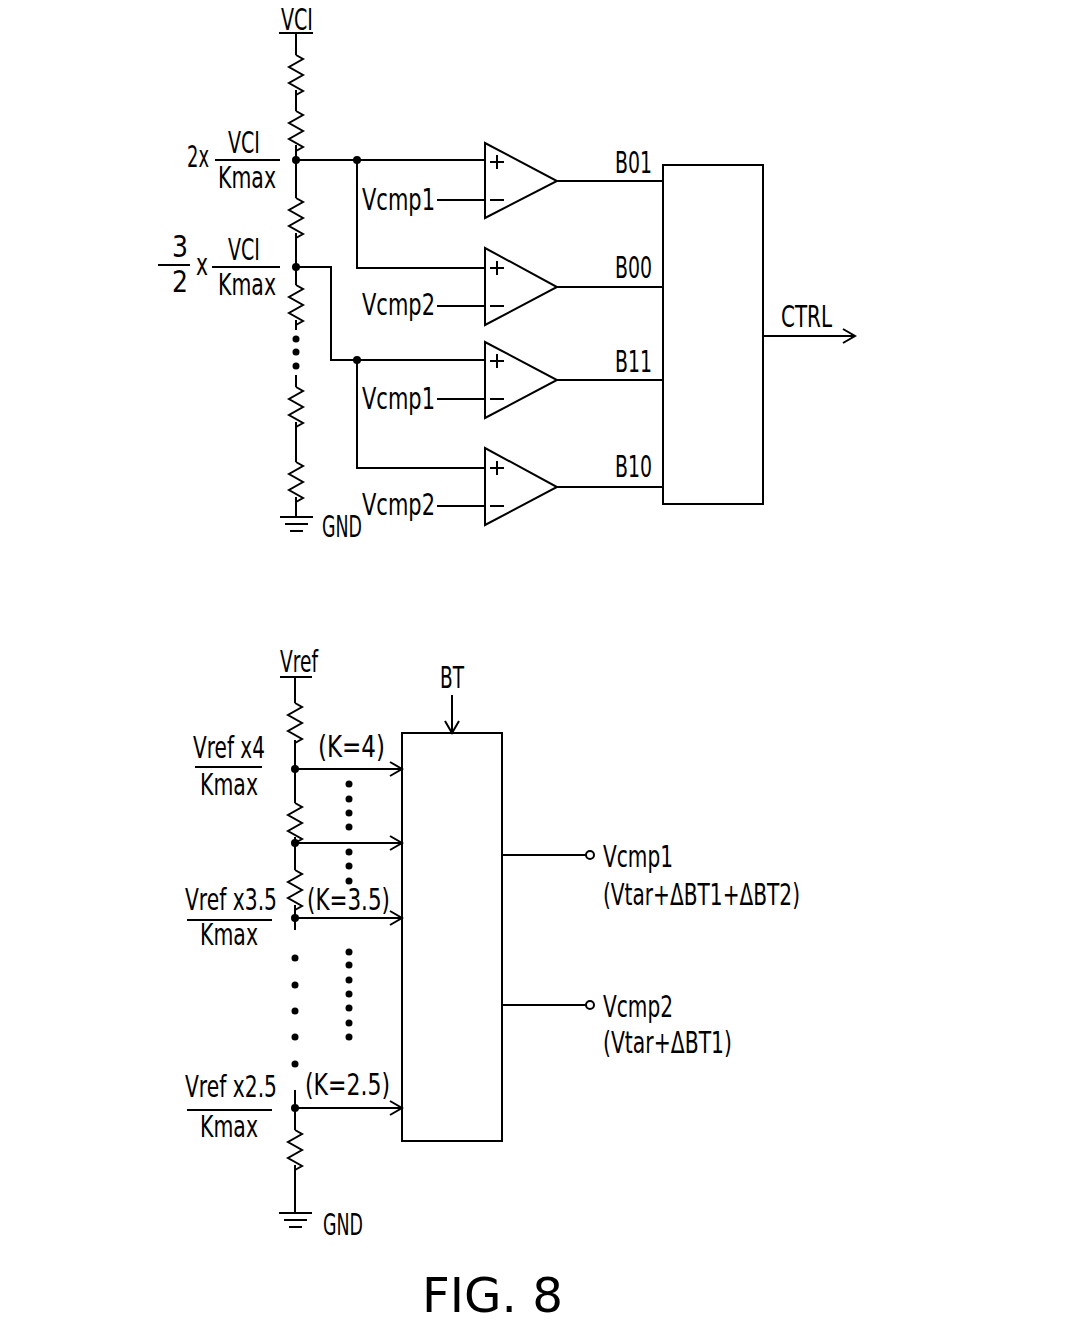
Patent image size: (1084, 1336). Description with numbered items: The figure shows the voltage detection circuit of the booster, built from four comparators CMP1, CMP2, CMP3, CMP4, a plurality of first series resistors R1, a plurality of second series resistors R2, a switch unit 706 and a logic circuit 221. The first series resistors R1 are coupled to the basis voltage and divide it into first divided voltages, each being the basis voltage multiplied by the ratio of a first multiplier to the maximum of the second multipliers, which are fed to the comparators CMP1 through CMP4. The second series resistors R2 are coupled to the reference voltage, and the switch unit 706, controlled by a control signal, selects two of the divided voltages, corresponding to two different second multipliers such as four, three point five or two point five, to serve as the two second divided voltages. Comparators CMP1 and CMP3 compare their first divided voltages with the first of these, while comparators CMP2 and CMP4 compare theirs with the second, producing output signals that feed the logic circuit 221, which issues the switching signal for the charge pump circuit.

The first series resistors R1 is at (305, 72).
The comparator CMP1 is at (522, 357).
The comparator CMP2 is at (522, 464).
The comparator CMP3 is at (522, 158).
The comparator CMP4 is at (522, 264).
The logic circuit 221 is at (705, 506).
The second series resistors R2 is at (317, 722).
The switch unit 706 is at (440, 1142).